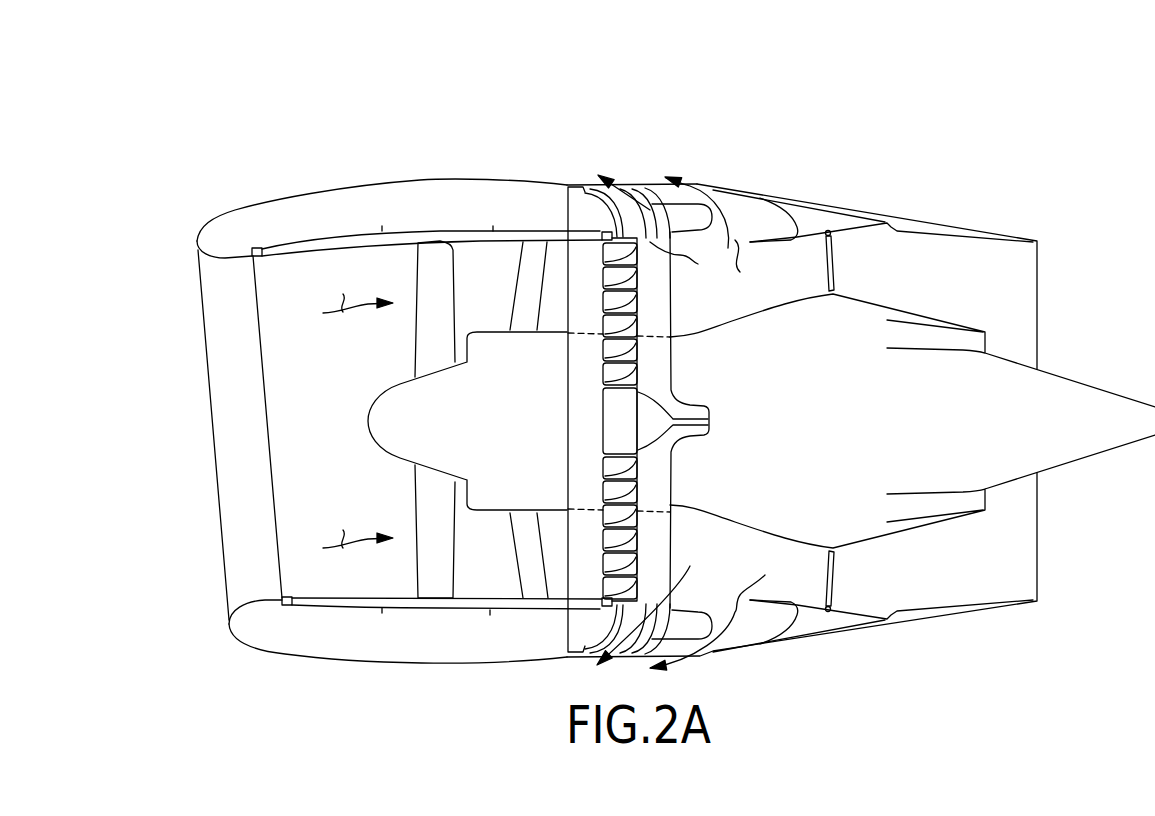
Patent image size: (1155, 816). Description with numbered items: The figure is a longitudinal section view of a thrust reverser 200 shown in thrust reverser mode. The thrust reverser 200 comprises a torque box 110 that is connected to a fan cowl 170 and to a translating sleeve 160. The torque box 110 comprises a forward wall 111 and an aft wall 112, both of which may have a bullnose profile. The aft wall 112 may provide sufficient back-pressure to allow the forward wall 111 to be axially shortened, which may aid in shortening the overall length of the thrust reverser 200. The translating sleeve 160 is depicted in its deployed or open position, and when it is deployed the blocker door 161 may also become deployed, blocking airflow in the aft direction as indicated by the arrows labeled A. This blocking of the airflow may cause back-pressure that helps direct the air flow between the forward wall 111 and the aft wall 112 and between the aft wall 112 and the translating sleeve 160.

The thrust reverser 200 is at (309, 84).
The fan cowl 170 is at (253, 217).
The torque box 110 is at (570, 172).
The forward wall 111 is at (567, 188).
The aft wall 112 is at (660, 177).
The translating sleeve 160 is at (823, 207).
The blocker door 161 is at (836, 270).